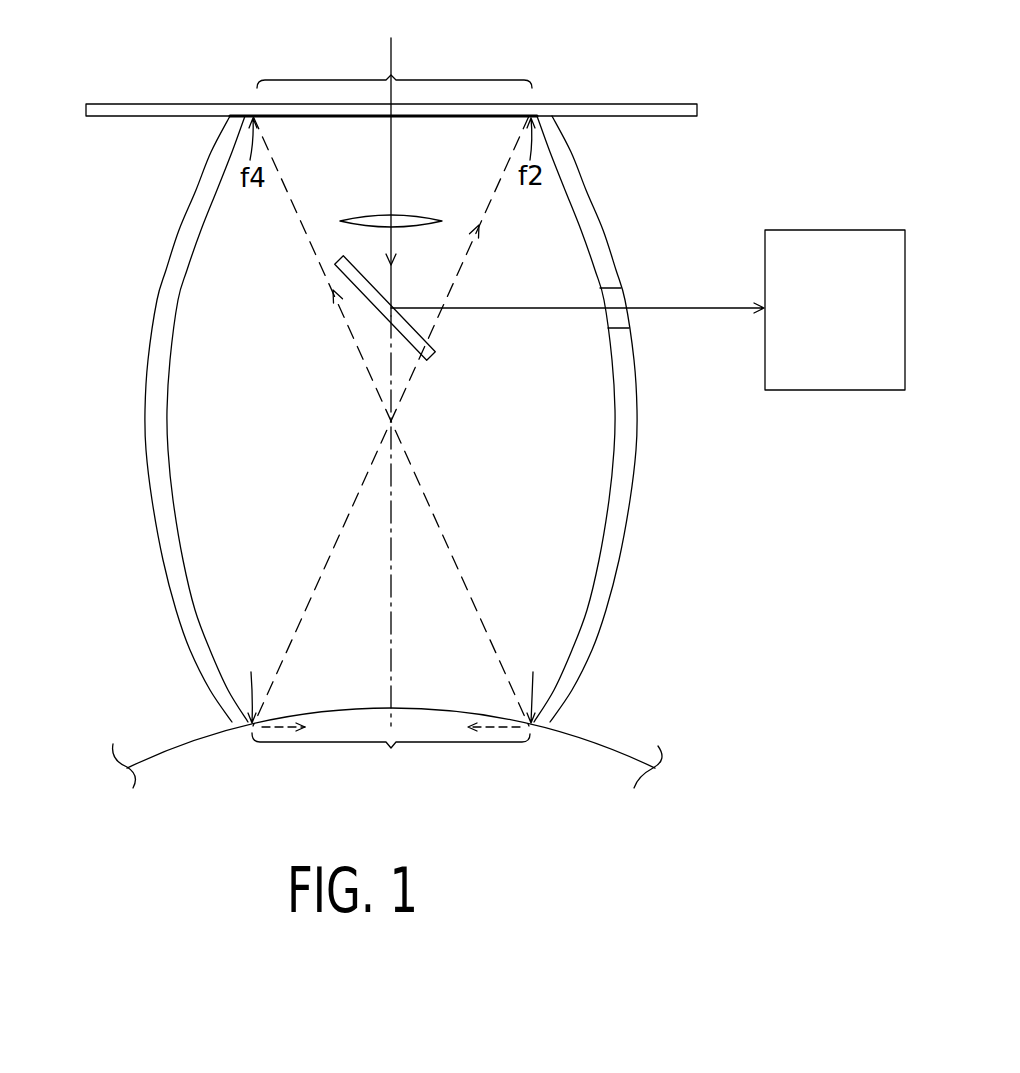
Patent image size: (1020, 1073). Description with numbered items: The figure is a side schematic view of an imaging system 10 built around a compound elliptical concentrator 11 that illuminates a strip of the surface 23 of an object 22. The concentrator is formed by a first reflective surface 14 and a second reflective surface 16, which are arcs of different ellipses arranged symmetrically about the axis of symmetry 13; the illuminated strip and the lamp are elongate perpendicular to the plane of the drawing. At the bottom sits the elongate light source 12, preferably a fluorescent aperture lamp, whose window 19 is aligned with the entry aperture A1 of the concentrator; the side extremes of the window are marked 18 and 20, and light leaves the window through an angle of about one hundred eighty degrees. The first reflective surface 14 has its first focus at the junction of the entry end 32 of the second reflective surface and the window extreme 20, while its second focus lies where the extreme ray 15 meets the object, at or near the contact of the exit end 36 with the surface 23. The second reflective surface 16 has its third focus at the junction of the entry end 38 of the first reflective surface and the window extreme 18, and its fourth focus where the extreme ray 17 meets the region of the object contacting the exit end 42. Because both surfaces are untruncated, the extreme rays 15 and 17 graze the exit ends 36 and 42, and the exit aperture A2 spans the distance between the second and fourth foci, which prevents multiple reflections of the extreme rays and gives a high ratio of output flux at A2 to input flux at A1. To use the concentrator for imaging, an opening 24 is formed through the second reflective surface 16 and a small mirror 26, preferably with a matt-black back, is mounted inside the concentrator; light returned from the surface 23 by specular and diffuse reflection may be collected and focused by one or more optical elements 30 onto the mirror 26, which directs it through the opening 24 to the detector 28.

The imaging system 10 is at (89, 297).
The compound elliptical concentrator 11 is at (631, 545).
The elongate light source 12 is at (177, 745).
The axis of symmetry 13 is at (392, 538).
The first reflective surface 14 is at (148, 358).
The extreme ray 15 is at (314, 567).
The second reflective surface 16 is at (637, 409).
The extreme ray 17 is at (453, 543).
The window extreme 18 is at (250, 727).
The window 19 is at (370, 707).
The window extreme 20 is at (531, 727).
The object 22 is at (160, 103).
The surface 23 is at (145, 117).
The opening 24 is at (613, 298).
The mirror 26 is at (437, 354).
The detector 28 is at (857, 392).
The optical elements 30 is at (396, 220).
The entry end of the second reflective surface 32 is at (547, 720).
The exit end of the second reflective surface 36 is at (547, 124).
The entry end of the first reflective surface 38 is at (235, 718).
The exit end of the first reflective surface 42 is at (232, 125).
The entry aperture A1 is at (391, 748).
The exit aperture A2 is at (393, 78).